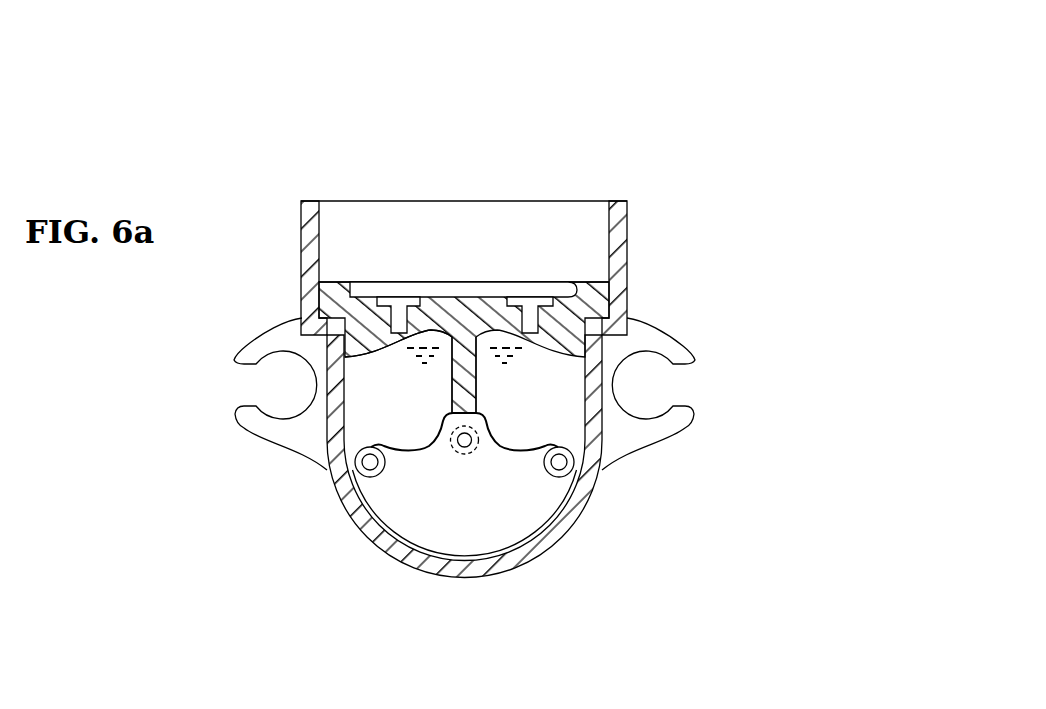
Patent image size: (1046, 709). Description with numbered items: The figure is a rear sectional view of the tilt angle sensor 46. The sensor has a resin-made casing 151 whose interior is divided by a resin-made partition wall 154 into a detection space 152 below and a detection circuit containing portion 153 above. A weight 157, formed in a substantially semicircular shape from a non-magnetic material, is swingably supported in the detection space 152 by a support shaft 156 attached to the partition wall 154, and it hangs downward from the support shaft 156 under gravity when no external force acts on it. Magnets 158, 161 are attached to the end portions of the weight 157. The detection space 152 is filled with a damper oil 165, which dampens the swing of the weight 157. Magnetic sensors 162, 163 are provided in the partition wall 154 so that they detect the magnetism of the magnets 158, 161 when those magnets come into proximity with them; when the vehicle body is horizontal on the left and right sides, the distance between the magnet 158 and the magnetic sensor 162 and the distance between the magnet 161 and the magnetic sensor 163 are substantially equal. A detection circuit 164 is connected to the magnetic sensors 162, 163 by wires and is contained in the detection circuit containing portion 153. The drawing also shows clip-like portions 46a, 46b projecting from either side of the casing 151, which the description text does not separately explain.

The tilt angle sensor 46 is at (355, 136).
The left clip portion 46a is at (243, 423).
The right clip portion 46b is at (685, 423).
The casing 151 is at (300, 238).
The detection space 152 is at (348, 392).
The detection circuit containing portion 153 is at (610, 220).
The partition wall 154 is at (592, 298).
The support shaft 156 is at (473, 445).
The weight 157 is at (417, 518).
The magnet 158 is at (343, 495).
The magnet 161 is at (559, 463).
The magnetic sensor 162 is at (393, 315).
The magnetic sensor 163 is at (536, 317).
The detection circuit 164 is at (490, 217).
The damper oil 165 is at (557, 407).